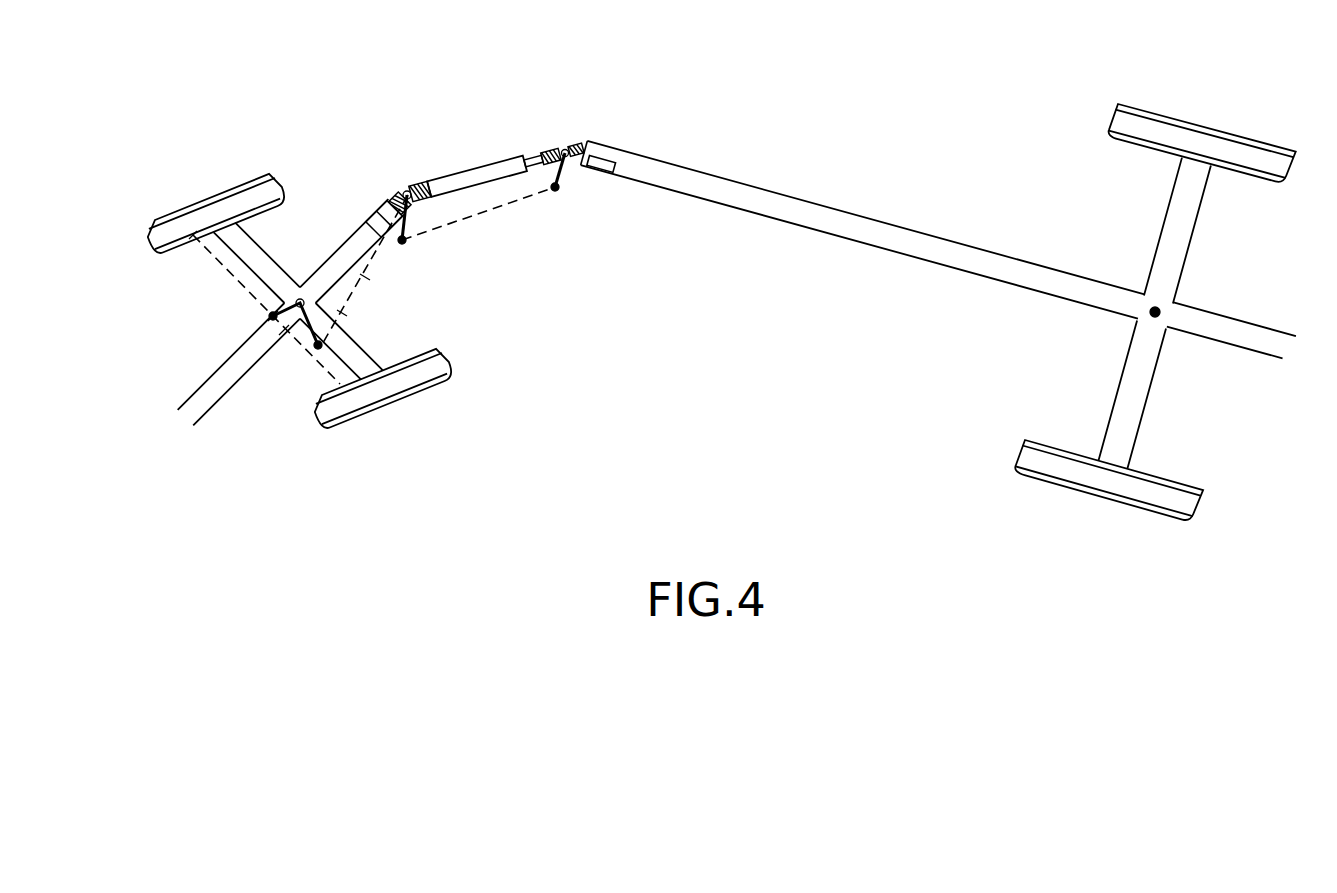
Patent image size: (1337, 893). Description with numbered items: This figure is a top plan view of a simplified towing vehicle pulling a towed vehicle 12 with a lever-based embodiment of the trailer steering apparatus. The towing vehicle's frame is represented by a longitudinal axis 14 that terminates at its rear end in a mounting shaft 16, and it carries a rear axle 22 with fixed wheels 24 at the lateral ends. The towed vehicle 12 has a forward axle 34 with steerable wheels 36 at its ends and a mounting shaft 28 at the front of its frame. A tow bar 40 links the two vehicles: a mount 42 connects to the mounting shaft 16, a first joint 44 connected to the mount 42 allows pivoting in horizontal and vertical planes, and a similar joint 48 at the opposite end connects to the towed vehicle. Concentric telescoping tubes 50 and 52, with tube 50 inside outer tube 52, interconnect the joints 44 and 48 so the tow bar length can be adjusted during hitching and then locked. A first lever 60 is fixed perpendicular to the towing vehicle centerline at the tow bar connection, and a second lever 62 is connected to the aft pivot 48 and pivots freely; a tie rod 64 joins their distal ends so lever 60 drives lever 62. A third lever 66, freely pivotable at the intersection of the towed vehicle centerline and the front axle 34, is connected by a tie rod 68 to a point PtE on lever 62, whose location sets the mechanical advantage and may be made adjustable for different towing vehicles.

The towed vehicle 12 is at (213, 397).
The longitudinal axis 14 is at (850, 212).
The mounting shaft 16 is at (600, 157).
The rear axle 22 is at (1191, 239).
The fixed wheels 24 is at (1253, 132).
The mounting shaft 28 is at (381, 200).
The forward axle 34 is at (278, 257).
The steerable wheels 36 is at (163, 212).
The tow bar 40 is at (472, 124).
The mount 42 is at (578, 148).
The first joint 44 is at (565, 118).
The joint 48 is at (403, 188).
The tube 50 is at (532, 150).
The outer tube 52 is at (450, 170).
The first lever 60 is at (563, 173).
The second lever 62 is at (403, 228).
The tie rod 64 is at (535, 196).
The third lever 66 is at (342, 313).
The tie rod 68 is at (365, 277).
The point PtE is at (405, 212).